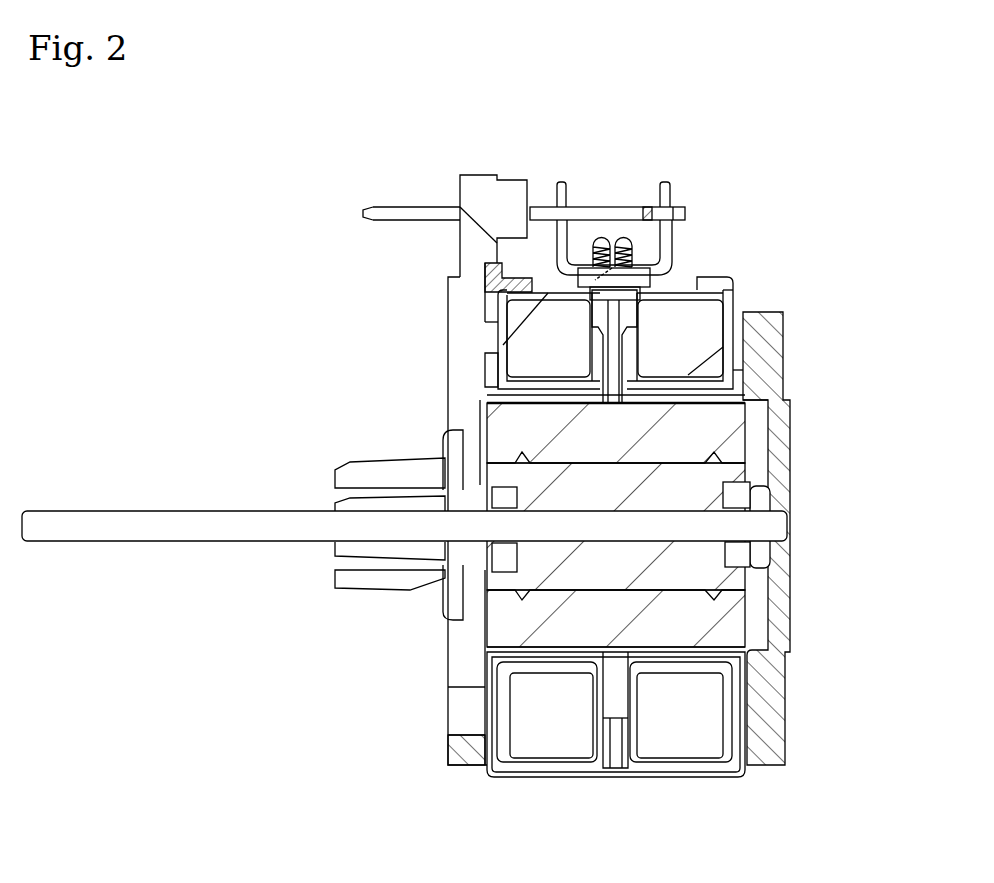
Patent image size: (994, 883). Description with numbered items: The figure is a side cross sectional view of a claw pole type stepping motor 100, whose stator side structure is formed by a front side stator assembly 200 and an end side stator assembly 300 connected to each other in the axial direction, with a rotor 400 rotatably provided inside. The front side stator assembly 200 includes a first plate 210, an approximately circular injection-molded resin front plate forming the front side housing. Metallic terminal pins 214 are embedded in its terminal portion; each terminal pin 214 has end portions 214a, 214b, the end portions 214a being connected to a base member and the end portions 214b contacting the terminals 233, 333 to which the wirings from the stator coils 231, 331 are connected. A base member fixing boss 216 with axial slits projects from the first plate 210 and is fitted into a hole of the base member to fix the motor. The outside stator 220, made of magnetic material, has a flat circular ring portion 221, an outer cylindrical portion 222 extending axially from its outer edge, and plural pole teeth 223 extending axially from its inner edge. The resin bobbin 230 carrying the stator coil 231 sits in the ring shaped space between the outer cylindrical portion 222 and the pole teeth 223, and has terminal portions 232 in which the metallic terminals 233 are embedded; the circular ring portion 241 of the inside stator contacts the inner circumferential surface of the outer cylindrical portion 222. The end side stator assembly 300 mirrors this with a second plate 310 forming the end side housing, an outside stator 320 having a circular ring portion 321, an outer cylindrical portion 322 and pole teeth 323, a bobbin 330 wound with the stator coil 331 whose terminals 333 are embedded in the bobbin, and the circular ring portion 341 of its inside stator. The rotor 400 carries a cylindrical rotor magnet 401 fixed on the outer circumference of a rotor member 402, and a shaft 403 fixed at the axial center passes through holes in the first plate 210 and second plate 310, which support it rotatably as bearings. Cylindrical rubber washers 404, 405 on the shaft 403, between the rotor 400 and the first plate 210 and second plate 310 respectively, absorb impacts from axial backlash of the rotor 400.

The stepping motor 100 is at (386, 736).
The front side stator assembly 200 is at (615, 816).
The end side stator assembly 300 is at (788, 816).
The rotor 400 is at (538, 522).
The first plate 210 is at (473, 190).
The terminal pin 214 is at (410, 203).
The end portion 214a is at (372, 205).
The end portion 214b is at (675, 210).
The base member fixing boss 216 is at (347, 582).
The outside stator 220 is at (480, 302).
The circular ring portion 221 is at (493, 377).
The outer cylindrical portion 222 is at (525, 283).
The pole teeth 223 is at (542, 397).
The bobbin 230 is at (503, 330).
The stator coil 231 is at (547, 287).
The terminal portion 232 is at (638, 273).
The terminal 233 is at (665, 182).
The circular ring portion 241 is at (610, 700).
The second plate 310 is at (760, 358).
The outside stator 320 is at (746, 280).
The circular ring portion 321 is at (740, 373).
The outer cylindrical portion 322 is at (713, 282).
The pole teeth 323 is at (667, 397).
The bobbin 330 is at (727, 333).
The stator coil 331 is at (673, 303).
The terminal 333 is at (563, 183).
The circular ring portion 341 is at (622, 700).
The rotor magnet 401 is at (498, 430).
The rotor member 402 is at (503, 470).
The shaft 403 is at (82, 530).
The rubber washer 404 is at (503, 553).
The rubber washer 405 is at (740, 505).